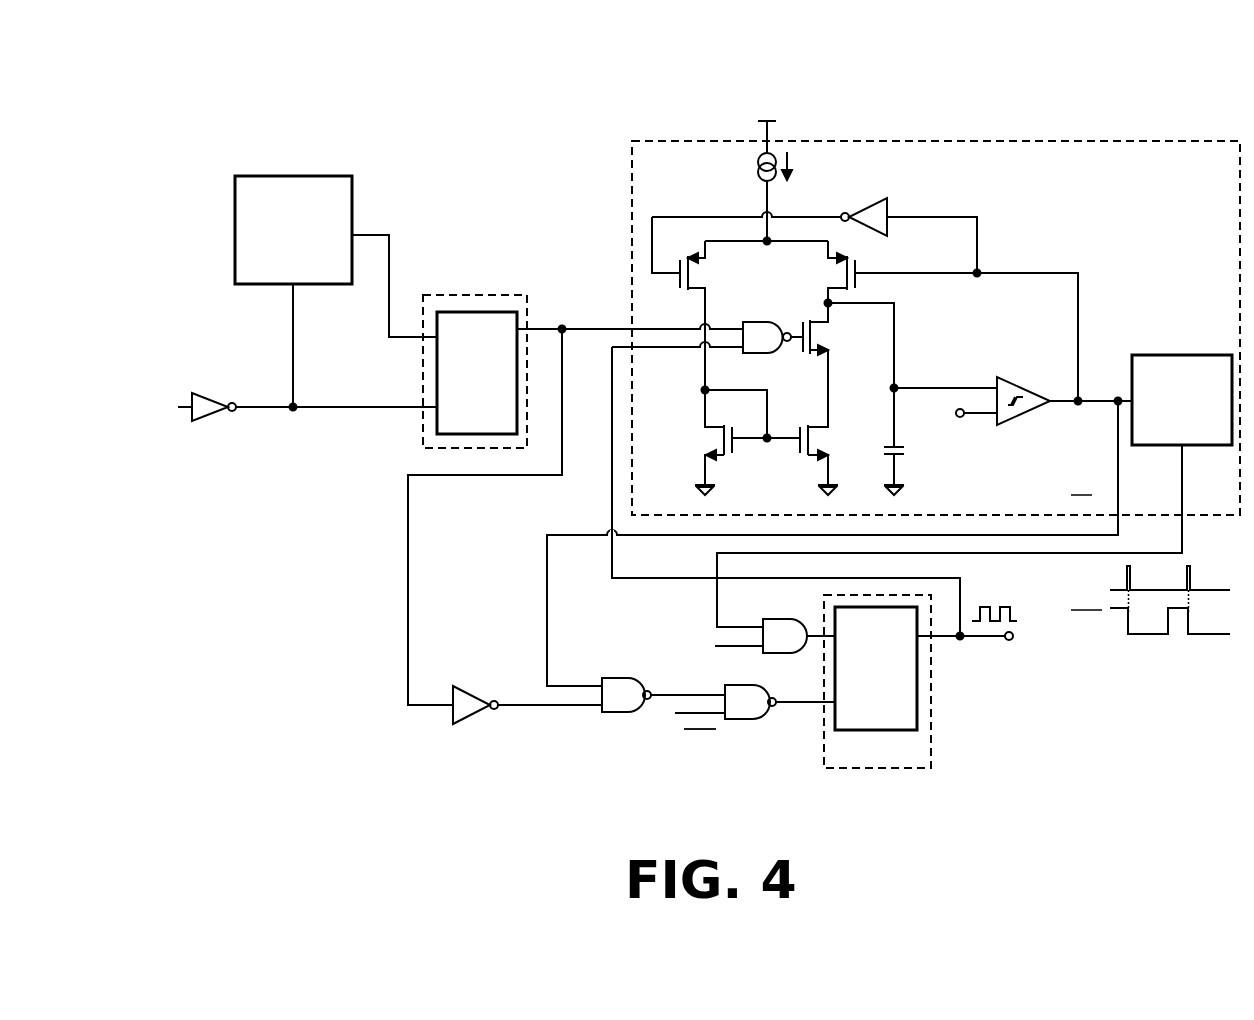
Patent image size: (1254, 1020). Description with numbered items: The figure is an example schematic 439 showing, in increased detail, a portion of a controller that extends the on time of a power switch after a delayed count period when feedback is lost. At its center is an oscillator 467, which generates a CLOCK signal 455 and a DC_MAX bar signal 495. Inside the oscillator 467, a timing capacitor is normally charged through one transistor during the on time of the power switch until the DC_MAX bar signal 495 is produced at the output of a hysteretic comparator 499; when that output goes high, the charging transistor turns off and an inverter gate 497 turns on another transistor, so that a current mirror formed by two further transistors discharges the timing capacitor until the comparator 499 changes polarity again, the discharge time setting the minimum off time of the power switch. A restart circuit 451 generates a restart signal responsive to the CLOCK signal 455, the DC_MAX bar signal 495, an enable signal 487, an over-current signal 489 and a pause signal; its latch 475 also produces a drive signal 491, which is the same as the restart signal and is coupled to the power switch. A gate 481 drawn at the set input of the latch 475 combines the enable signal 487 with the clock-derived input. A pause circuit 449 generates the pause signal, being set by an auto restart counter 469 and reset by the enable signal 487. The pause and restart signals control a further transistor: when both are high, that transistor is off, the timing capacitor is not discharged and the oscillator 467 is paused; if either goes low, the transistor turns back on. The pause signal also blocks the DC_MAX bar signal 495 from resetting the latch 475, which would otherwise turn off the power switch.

The schematic 439 is at (1208, 71).
The auto restart counter 469 is at (291, 178).
The enable signal 487 is at (198, 374).
The pause circuit 449 is at (425, 430).
The oscillator 467 is at (957, 148).
The inverter gate 497 is at (858, 201).
The hysteretic comparator 499 is at (1008, 378).
The DC_MAX bar signal 495 is at (1108, 488).
The CLOCK signal 455 is at (1184, 503).
The restart circuit 451 is at (931, 718).
The latch 475 is at (874, 722).
The AND gate 481 is at (784, 630).
The drive signal 491 is at (1002, 604).
The over-current signal 489 is at (662, 737).